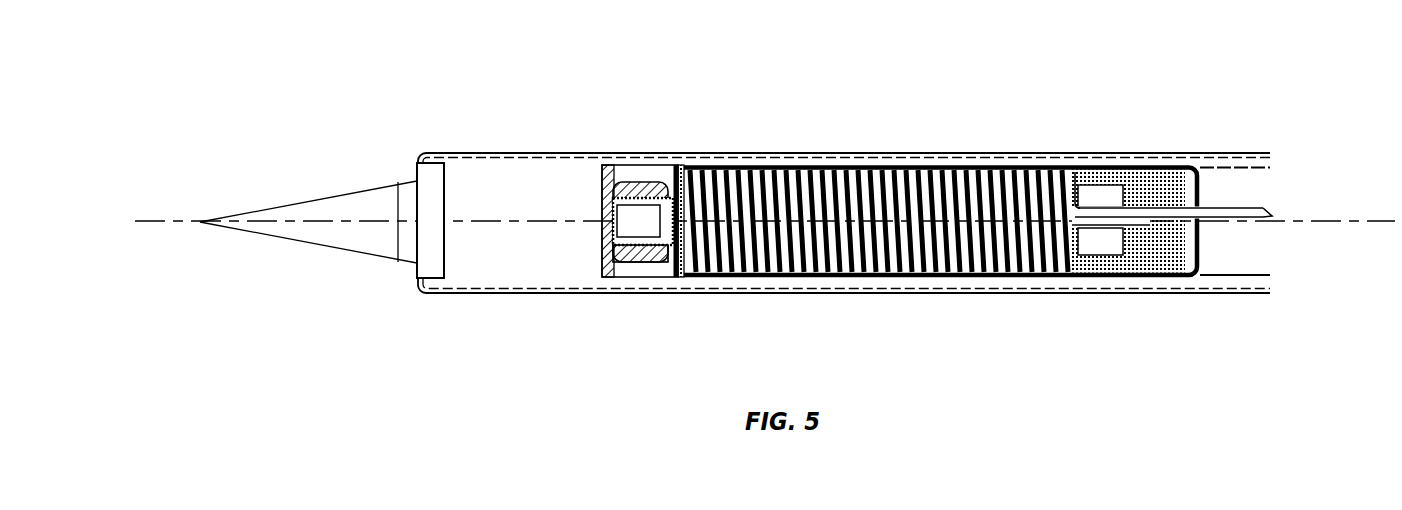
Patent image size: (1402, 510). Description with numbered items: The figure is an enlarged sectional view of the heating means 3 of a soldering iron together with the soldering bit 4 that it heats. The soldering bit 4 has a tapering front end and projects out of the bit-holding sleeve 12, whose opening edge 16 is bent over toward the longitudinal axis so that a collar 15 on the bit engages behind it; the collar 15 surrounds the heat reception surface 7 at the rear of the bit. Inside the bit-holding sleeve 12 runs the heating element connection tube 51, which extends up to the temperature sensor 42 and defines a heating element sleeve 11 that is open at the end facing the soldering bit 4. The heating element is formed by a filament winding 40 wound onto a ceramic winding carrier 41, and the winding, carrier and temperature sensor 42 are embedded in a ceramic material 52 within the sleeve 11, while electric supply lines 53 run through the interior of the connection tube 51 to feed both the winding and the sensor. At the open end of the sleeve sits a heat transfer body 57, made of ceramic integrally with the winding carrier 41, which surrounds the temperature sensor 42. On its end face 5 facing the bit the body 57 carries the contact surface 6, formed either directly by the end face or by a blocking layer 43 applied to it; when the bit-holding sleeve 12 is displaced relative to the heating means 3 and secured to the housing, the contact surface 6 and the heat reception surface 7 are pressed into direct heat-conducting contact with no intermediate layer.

The heating means 3 is at (775, 209).
The soldering bit 4 is at (290, 215).
The end face 5 is at (611, 185).
The contact surface 6 is at (600, 243).
The heat reception surface 7 is at (446, 251).
The heating element sleeve 11 is at (977, 222).
The bit-holding sleeve 12 is at (1224, 153).
The collar 15 is at (432, 185).
The opening edge 16 is at (415, 163).
The filament winding 40 is at (940, 237).
The winding carrier 41 is at (1098, 240).
The temperature sensor 42 is at (639, 217).
The blocking layer 43 is at (640, 253).
The heating element connection tube 51 is at (1237, 277).
The ceramic material 52 is at (1140, 172).
The electric supply lines 53 is at (1272, 216).
The heat transfer body 57 is at (631, 173).